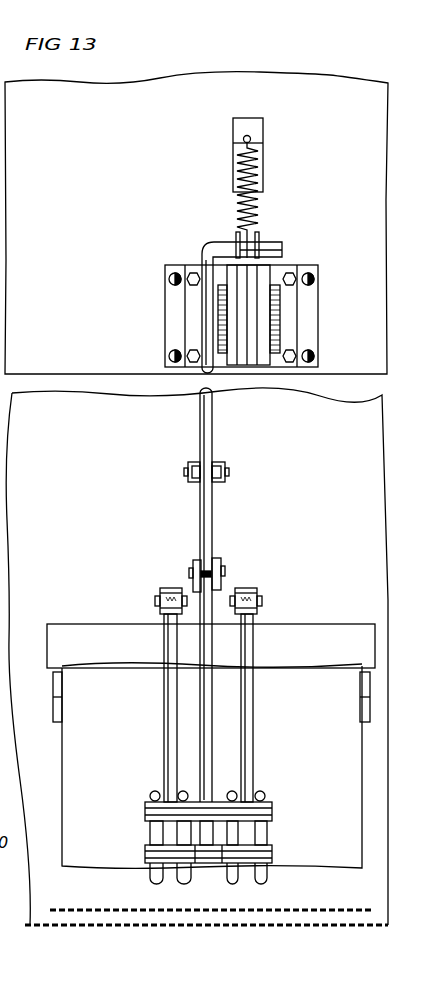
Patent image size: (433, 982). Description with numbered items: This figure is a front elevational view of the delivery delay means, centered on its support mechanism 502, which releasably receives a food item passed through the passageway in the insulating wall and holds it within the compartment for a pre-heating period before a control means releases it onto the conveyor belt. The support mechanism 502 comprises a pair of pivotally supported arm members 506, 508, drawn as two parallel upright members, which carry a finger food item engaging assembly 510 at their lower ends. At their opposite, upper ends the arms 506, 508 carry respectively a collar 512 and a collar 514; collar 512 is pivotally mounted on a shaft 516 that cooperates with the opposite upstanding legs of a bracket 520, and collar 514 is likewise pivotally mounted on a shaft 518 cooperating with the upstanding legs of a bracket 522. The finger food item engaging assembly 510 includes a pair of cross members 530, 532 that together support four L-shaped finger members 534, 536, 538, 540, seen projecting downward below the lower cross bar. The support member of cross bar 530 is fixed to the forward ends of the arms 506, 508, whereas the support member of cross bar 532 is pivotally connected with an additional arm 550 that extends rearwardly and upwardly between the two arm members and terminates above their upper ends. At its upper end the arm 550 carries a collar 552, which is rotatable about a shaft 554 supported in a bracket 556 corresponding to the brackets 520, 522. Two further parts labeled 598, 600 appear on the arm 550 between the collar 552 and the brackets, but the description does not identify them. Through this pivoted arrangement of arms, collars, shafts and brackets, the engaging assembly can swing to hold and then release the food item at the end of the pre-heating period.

The support mechanism 502 is at (150, 714).
The arm member 506 is at (252, 725).
The arm member 508 is at (167, 743).
The finger food item engaging assembly 510 is at (215, 847).
The collar 512 is at (258, 592).
The collar 514 is at (168, 587).
The shaft 516 is at (263, 602).
The shaft 518 is at (155, 599).
The bracket 520 is at (245, 588).
The bracket 522 is at (160, 590).
The cross member 530 is at (143, 805).
The cross member 532 is at (143, 852).
The L-shaped finger member 534 is at (150, 877).
The pin 536 is at (183, 880).
The pin 538 is at (232, 880).
The L-shaped finger member 540 is at (267, 880).
The additional arm 550 is at (213, 700).
The collar 552 is at (218, 461).
The shaft 554 is at (231, 470).
The bracket 556 is at (197, 460).
The coupling half 598 is at (217, 585).
The coupling half 600 is at (195, 562).